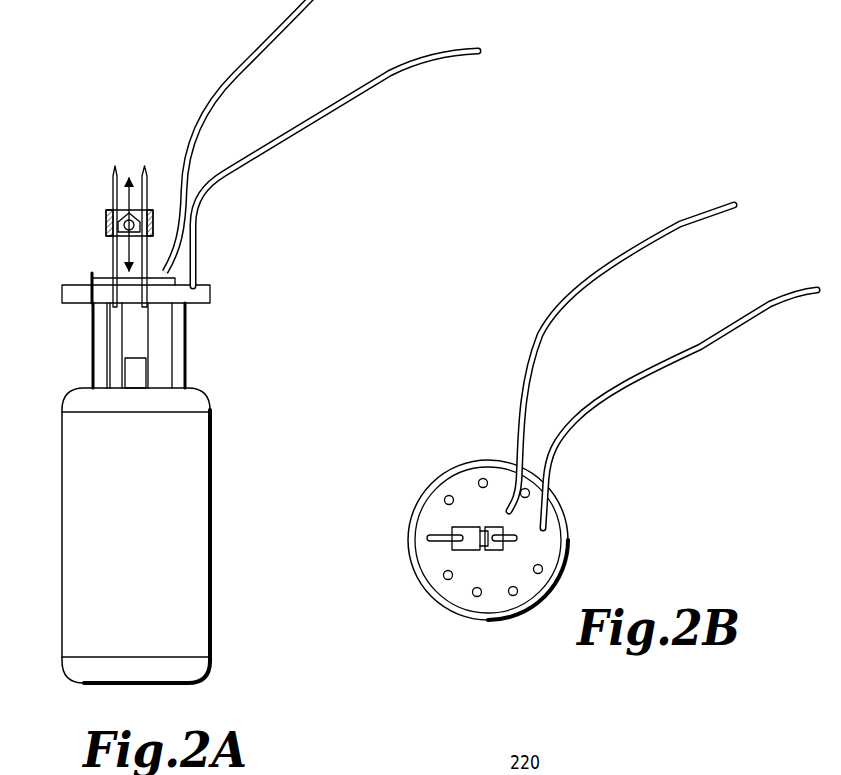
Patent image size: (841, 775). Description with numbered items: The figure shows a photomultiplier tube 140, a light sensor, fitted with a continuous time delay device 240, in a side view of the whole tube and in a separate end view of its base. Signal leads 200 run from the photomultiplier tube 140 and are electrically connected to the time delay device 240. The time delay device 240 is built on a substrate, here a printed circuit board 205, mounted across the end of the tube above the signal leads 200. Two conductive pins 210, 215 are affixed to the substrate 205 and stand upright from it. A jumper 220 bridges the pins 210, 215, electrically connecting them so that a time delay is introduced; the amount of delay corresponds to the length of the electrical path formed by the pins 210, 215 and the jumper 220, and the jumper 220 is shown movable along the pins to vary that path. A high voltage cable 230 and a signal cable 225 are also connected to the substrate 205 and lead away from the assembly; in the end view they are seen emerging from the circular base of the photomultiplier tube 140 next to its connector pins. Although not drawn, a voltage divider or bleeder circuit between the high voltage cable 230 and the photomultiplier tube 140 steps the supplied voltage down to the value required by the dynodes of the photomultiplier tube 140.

In FIG. 2A, the photomultiplier tube 140 is at (212, 538).
In FIG. 2B, the photomultiplier tube 140 is at (445, 608).
In FIG. 2A, the signal leads 200 is at (115, 345).
In FIG. 2A, the printed circuit board 205 is at (211, 293).
In FIG. 2A, the conductive pin 210 is at (114, 167).
In FIG. 2A, the conductive pin 215 is at (145, 167).
In FIG. 2A, the jumper 220 is at (106, 224).
In FIG. 2A, the signal cable 225 is at (322, 14).
In FIG. 2B, the signal cable 225 is at (617, 257).
In FIG. 2A, the high voltage cable 230 is at (403, 73).
In FIG. 2B, the high voltage cable 230 is at (693, 348).
In FIG. 2A, the time delay device 240 is at (86, 195).